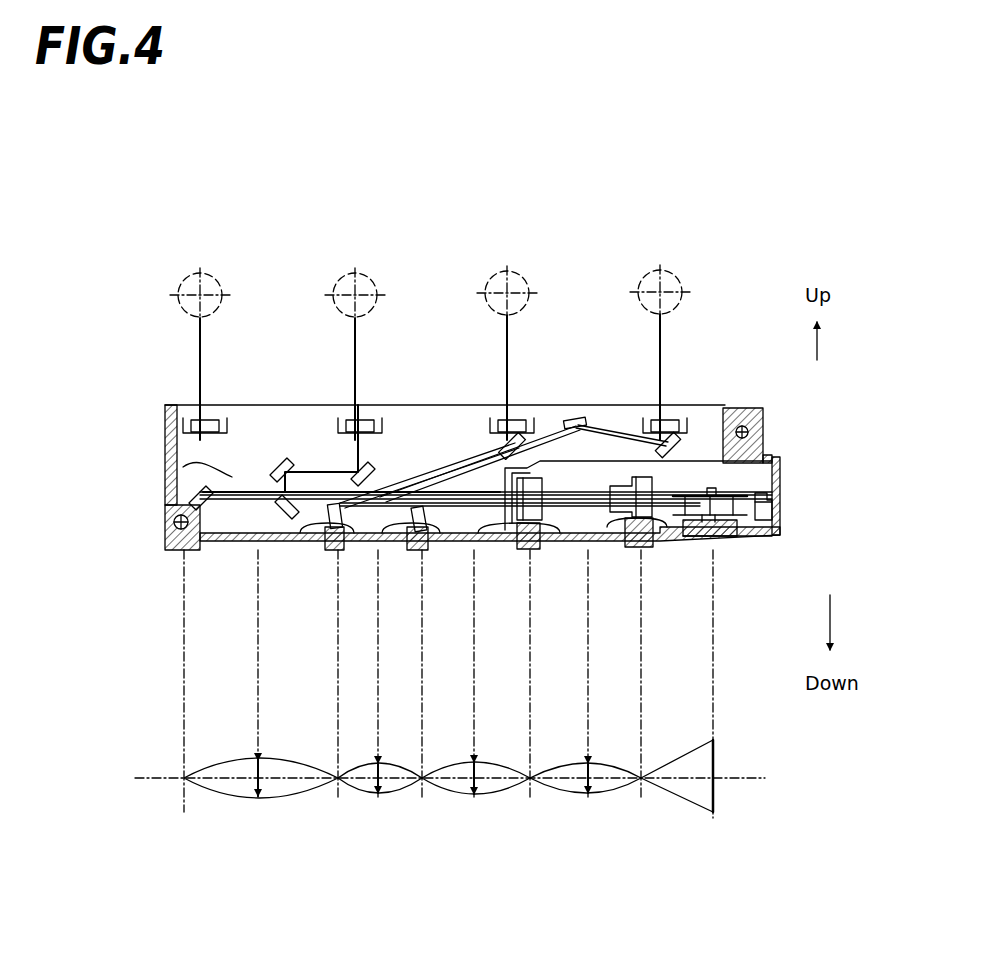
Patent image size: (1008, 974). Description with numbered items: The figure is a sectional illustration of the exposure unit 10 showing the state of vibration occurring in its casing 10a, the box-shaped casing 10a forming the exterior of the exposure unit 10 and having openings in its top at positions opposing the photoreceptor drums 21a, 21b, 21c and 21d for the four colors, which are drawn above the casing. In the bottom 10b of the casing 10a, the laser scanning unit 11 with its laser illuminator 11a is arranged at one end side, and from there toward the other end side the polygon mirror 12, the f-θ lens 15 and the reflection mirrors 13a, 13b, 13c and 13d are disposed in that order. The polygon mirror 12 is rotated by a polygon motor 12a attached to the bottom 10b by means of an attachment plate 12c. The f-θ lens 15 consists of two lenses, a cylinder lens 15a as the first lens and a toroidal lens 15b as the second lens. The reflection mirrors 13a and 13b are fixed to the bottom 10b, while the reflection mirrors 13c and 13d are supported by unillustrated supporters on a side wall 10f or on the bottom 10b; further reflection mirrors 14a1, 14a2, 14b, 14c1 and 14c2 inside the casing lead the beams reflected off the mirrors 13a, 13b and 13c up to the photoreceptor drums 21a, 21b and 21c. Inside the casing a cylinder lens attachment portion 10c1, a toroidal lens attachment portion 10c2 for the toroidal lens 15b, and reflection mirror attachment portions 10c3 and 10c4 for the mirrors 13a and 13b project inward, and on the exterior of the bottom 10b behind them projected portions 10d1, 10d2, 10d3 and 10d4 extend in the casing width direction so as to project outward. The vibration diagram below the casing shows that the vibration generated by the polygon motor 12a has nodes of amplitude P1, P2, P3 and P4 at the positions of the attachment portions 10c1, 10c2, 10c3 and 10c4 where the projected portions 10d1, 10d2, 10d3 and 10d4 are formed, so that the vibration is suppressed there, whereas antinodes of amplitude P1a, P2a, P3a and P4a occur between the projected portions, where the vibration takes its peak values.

The exposure unit 10 is at (157, 393).
The casing 10a is at (165, 428).
The bottom 10b is at (242, 553).
The cylinder lens attachment portion 10c1 is at (662, 545).
The toroidal lens attachment portion 10c2 is at (470, 545).
The reflection mirror attachment portion 10c3 is at (372, 543).
The reflection mirror attachment portion 10c4 is at (295, 543).
The projected portion 10d1 is at (625, 552).
The projected portion 10d2 is at (512, 552).
The projected portion 10d3 is at (416, 553).
The projected portion 10d4 is at (329, 553).
The side wall 10f is at (183, 467).
The laser scanning unit 11 is at (779, 510).
The laser illuminator 11a is at (777, 494).
The polygon mirror 12 is at (743, 552).
The polygon motor 12a is at (713, 550).
The attachment plate 12c is at (740, 539).
The reflection mirror 13a is at (447, 548).
The reflection mirror 13b is at (330, 550).
The reflection mirror 13c is at (267, 544).
The reflection mirror 13d is at (227, 545).
The reflection mirror 14a1 is at (571, 417).
The reflection mirror 14a2 is at (681, 436).
The reflection mirror 14b is at (521, 437).
The reflection mirror 14c1 is at (272, 462).
The reflection mirror 14c2 is at (374, 468).
The f-θ lens 15 is at (584, 573).
The cylinder lens 15a is at (595, 545).
The toroidal lens 15b is at (552, 545).
The photoreceptor drum 21a is at (667, 275).
The photoreceptor drum 21b is at (514, 276).
The photoreceptor drum 21c is at (362, 278).
The photoreceptor drum 21d is at (208, 278).
The node of amplitude P1 is at (630, 800).
The antinode of amplitude P1a is at (577, 800).
The node of amplitude P2 is at (520, 800).
The antinode of amplitude P2a is at (467, 800).
The node of amplitude P3 is at (410, 800).
The antinode of amplitude P3a is at (373, 800).
The node of amplitude P4 is at (320, 800).
The antinode of amplitude P4a is at (257, 800).